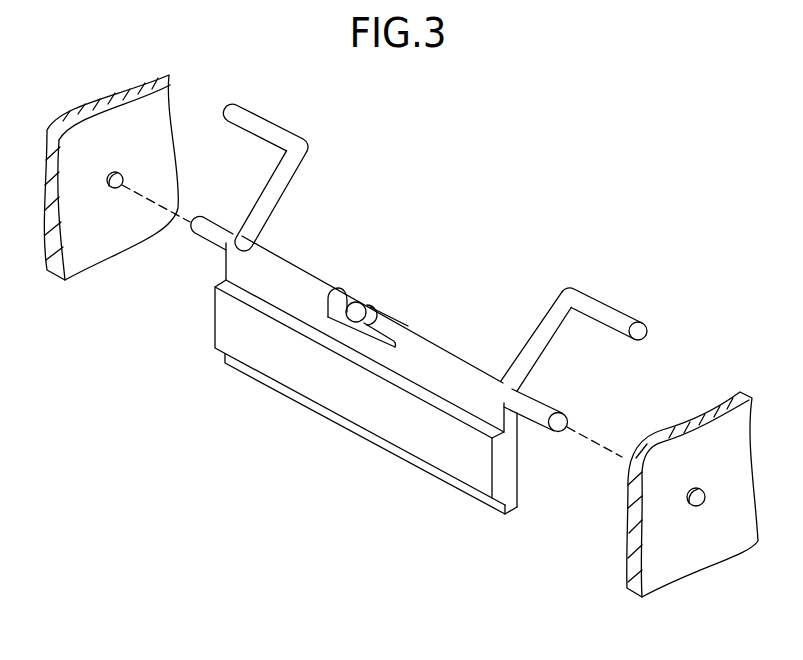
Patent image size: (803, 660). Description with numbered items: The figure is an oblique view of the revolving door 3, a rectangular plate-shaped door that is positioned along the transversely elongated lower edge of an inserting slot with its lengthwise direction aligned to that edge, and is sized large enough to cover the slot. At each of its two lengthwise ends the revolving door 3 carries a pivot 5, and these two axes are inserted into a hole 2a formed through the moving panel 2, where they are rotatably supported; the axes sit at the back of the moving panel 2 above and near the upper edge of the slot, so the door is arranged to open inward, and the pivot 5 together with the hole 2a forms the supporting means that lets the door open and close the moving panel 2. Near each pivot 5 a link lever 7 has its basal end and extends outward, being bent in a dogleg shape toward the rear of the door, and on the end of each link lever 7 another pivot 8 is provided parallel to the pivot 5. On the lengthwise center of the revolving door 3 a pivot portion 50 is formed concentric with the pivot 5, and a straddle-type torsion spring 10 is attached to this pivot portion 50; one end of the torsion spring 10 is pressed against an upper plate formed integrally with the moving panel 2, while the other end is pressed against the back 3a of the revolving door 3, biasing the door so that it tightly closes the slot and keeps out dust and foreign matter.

The moving panel 2 is at (112, 125).
The hole 2a is at (115, 188).
The revolving door 3 is at (382, 393).
The back of the revolving door 3a is at (518, 494).
The pivot 5 is at (203, 240).
The link lever 7 is at (285, 187).
The pivot 8 is at (265, 120).
The torsion spring 10 is at (365, 307).
The pivot portion 50 is at (396, 329).